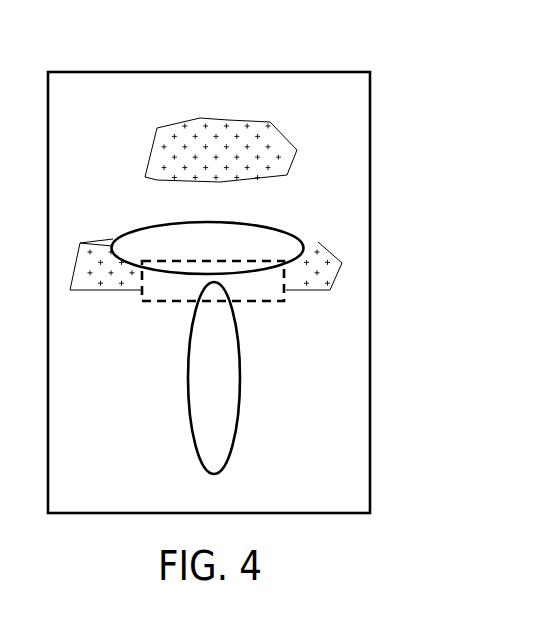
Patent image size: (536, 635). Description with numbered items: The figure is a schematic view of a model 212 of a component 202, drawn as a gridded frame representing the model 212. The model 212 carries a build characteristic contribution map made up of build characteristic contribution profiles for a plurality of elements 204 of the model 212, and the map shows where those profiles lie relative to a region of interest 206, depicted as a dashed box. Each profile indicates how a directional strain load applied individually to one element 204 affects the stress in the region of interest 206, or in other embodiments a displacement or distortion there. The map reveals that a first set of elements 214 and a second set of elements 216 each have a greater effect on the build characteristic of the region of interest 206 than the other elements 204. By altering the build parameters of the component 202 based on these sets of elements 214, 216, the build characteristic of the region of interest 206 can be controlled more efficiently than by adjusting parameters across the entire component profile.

The component 202 is at (355, 140).
The elements 204 is at (305, 172).
The region of interest 206 is at (290, 272).
The model 212 is at (328, 98).
The first set of elements 214 is at (222, 153).
The second set of elements 216 is at (286, 277).